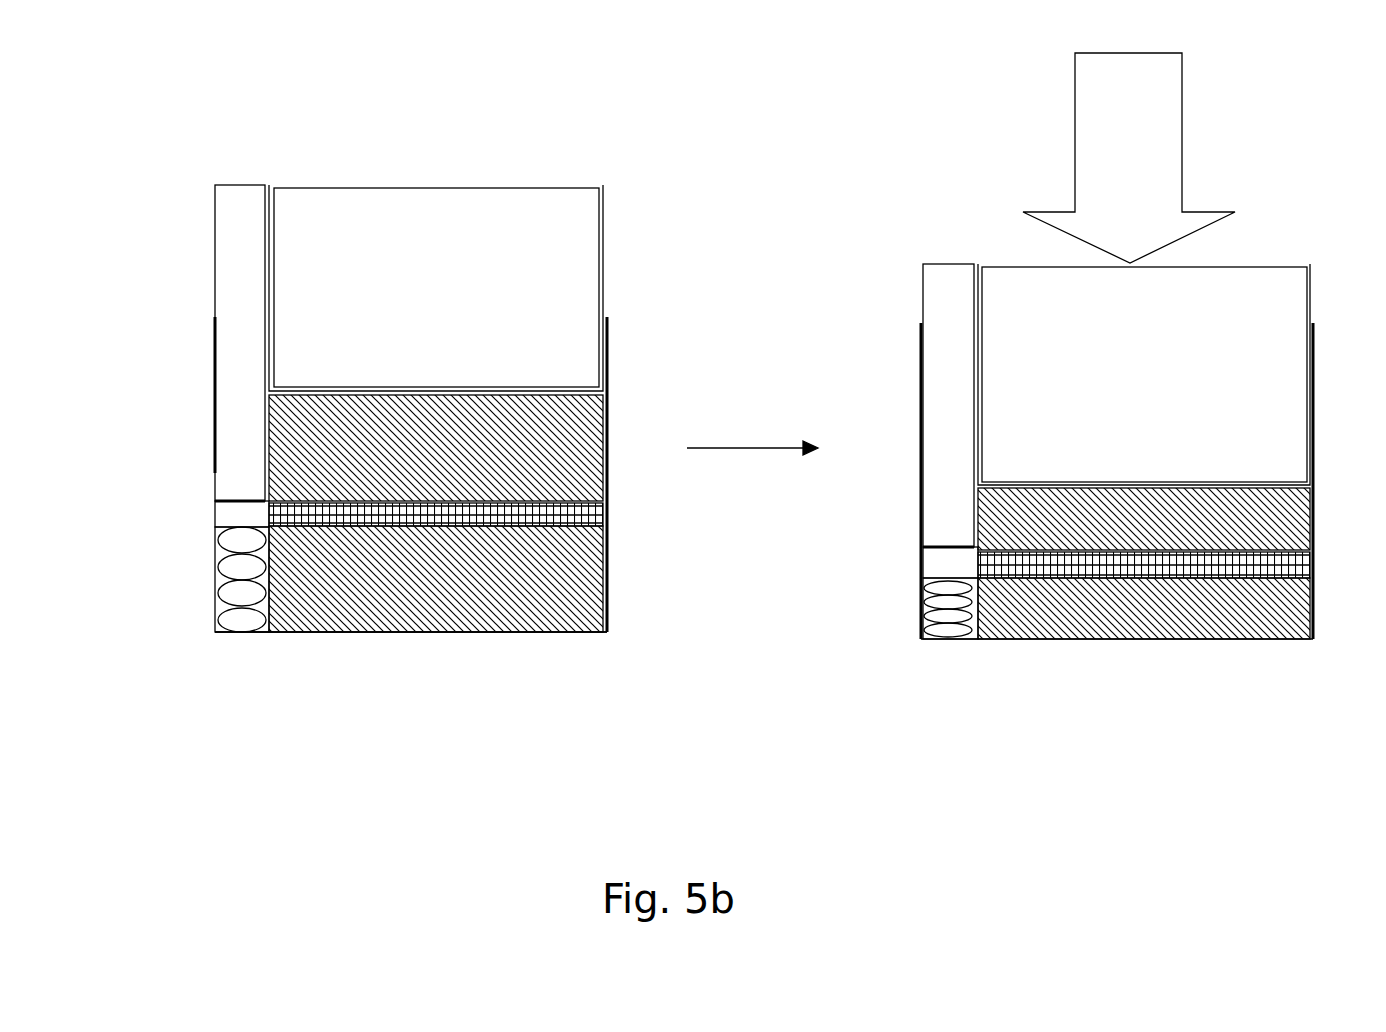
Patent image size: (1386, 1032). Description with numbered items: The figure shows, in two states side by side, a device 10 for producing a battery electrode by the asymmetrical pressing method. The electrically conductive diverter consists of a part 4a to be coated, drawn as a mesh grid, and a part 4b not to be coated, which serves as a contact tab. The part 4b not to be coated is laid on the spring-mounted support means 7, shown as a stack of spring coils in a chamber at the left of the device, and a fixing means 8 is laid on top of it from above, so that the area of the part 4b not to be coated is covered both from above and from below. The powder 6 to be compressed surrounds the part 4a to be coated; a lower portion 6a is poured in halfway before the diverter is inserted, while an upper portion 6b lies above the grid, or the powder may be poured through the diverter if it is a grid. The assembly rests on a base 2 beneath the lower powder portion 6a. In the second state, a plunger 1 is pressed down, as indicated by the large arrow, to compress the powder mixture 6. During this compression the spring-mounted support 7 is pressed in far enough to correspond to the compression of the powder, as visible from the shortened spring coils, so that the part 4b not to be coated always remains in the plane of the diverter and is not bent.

The device for producing a battery electrode 10 is at (347, 130).
The fixing means 8 is at (215, 263).
The plunger 1 is at (487, 247).
The powder mixture portion 6b is at (537, 433).
The part to be coated 4a is at (580, 518).
The powder mixture portion 6a is at (570, 592).
The part not to be coated 4b is at (215, 527).
The spring-mounted support means 7 is at (235, 597).
The base plate 2 is at (445, 632).
The powder mixture 6 is at (1253, 513).